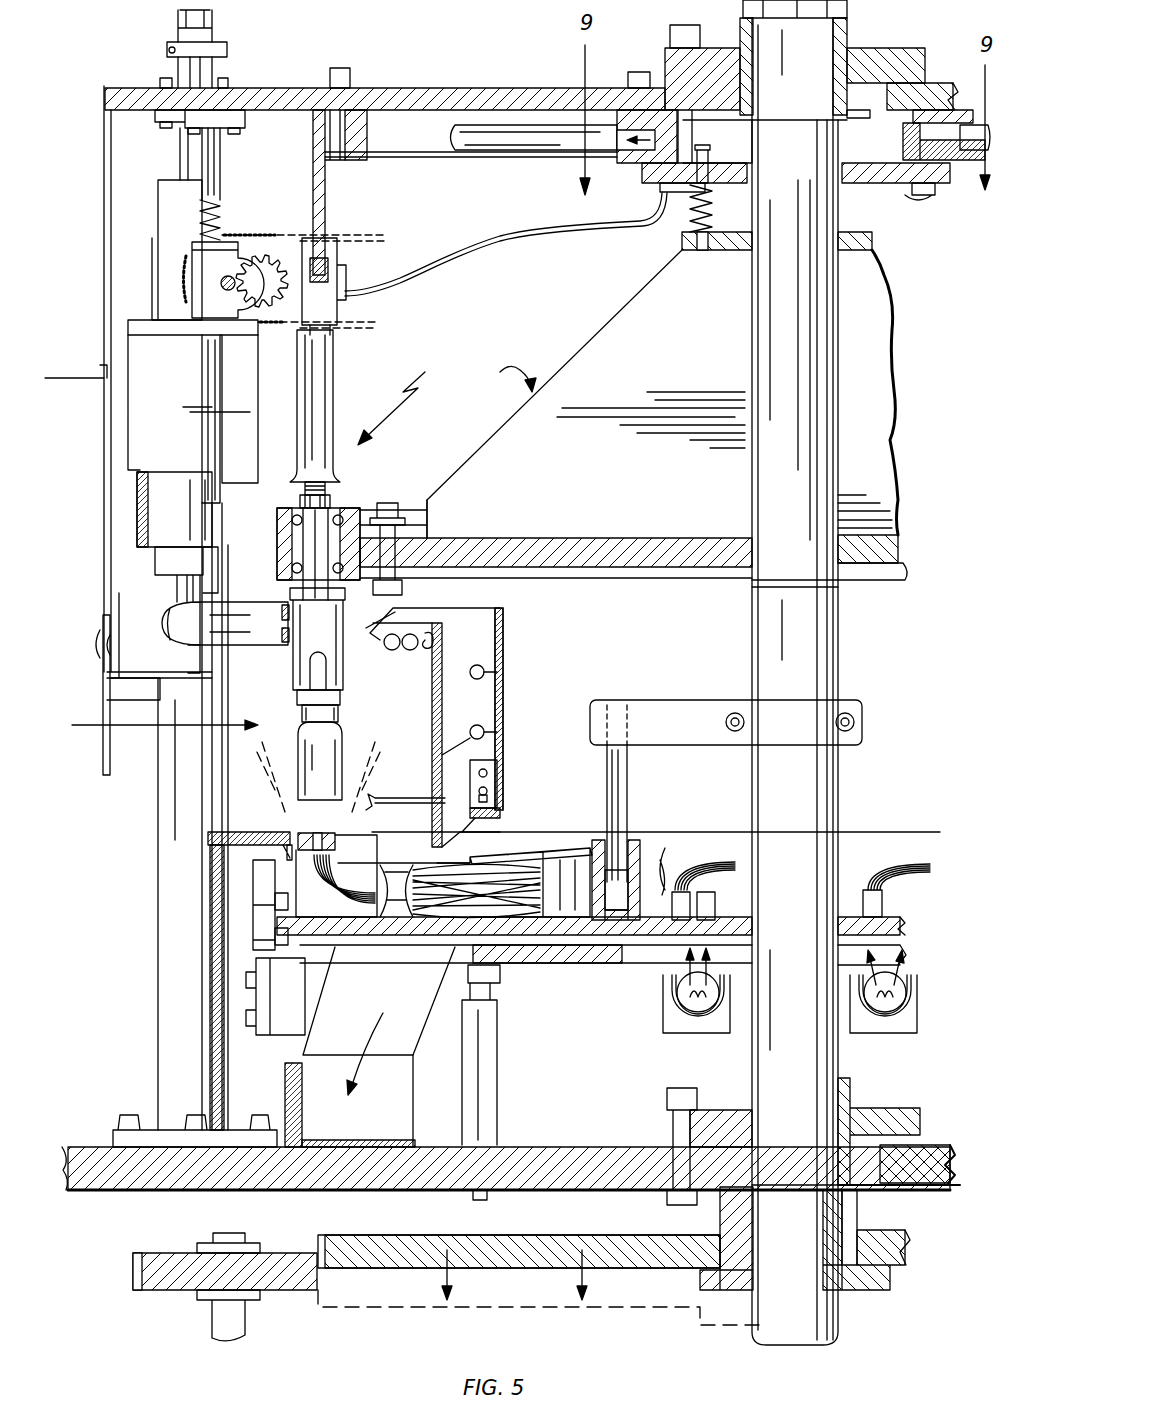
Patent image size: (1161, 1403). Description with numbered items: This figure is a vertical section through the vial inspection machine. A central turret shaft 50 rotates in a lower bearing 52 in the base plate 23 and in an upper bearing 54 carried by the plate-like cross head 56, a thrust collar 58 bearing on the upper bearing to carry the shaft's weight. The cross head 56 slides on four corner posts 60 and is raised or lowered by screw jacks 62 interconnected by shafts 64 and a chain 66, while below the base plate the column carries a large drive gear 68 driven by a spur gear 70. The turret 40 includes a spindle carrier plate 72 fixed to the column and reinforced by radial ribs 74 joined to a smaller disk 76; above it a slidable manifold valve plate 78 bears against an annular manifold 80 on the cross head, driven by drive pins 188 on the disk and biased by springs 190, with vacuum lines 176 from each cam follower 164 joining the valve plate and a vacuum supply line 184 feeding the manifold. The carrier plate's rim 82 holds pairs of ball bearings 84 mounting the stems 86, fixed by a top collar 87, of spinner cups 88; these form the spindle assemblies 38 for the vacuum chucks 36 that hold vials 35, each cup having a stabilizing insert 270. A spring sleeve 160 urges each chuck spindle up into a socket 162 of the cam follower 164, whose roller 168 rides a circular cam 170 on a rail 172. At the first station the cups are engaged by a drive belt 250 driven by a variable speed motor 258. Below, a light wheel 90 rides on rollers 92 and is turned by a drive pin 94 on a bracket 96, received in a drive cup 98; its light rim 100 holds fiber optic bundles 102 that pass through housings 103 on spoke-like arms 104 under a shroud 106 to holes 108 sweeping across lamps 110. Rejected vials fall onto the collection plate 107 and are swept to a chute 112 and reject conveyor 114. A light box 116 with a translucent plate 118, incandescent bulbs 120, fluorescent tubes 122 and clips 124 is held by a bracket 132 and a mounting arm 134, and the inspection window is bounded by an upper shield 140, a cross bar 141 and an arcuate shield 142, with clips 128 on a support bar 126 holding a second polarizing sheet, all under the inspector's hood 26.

The base plate 23 is at (590, 1147).
The hood 26 is at (75, 376).
The vial 35 is at (325, 797).
The vacuum chuck 36 is at (340, 712).
The spindle assembly 38 is at (407, 404).
The turret 40 is at (556, 414).
The central turret shaft 50 is at (787, 526).
The lower bearing 52 is at (880, 1115).
The upper bearing 54 is at (900, 58).
The cross head 56 is at (446, 90).
The thrust collar 58 is at (843, 6).
The corner posts 60 is at (208, 66).
The screw jacks 62 is at (220, 218).
The shafts 64 is at (224, 288).
The chain 66 is at (272, 234).
The drive gear 68 is at (513, 1248).
The spur gear 70 is at (277, 1290).
The spindle carrier plate 72 is at (582, 542).
The radial ribs 74 is at (642, 466).
The disk 76 is at (725, 255).
The manifold valve plate 78 is at (880, 183).
The annular manifold 80 is at (637, 165).
The circular rim 82 is at (427, 530).
The ball bearings 84 is at (292, 520).
The stems 86 is at (300, 536).
The top collar 87 is at (340, 500).
The spinner cups 88 is at (343, 618).
The light wheel 90 is at (590, 935).
The rollers 92 is at (283, 893).
The drive pin 94 is at (628, 775).
The bracket 96 is at (680, 702).
The drive cup 98 is at (645, 862).
The light rim 100 is at (330, 834).
The fiber optic bundles 102 is at (322, 870).
The housings 103 is at (400, 885).
The spoke-like arms 104 is at (430, 935).
The shroud 106 is at (565, 845).
The vial reject collection plate 107 is at (538, 963).
The holes 108 is at (685, 912).
The lamps 110 is at (680, 1000).
The chute 112 is at (388, 1040).
The reject conveyor 114 is at (357, 1126).
The light box 116 is at (504, 638).
The translucent plate 118 is at (442, 706).
The incandescent bulbs 120 is at (503, 676).
The fluorescent tubes 122 is at (391, 652).
The clips 124 is at (426, 655).
The support bar 126 is at (100, 760).
The clips 128 is at (98, 648).
The bracket 132 is at (502, 816).
The mounting arm 134 is at (404, 795).
The upper shield 140 is at (142, 680).
The cross bar 141 is at (262, 830).
The arcuate shield 142 is at (210, 1075).
The outer sleeve 160 is at (320, 400).
The socket 162 is at (335, 484).
The cam follower 164 is at (340, 312).
The cam follower roller 168 is at (335, 255).
The cam 170 is at (332, 178).
The rail 172 is at (360, 128).
The vacuum line 176 is at (448, 262).
The vacuum supply line 184 is at (530, 150).
The drive pins 188 is at (706, 150).
The springs 190 is at (688, 214).
The drive belt 250 is at (283, 612).
The variable speed motor 258 is at (140, 530).
The stabilizing inserts 270 is at (297, 700).